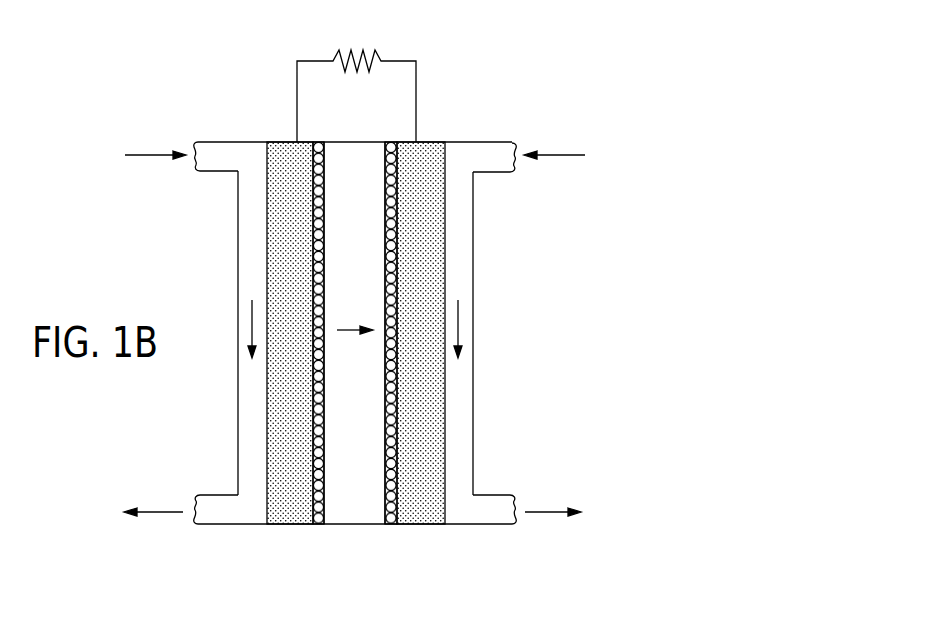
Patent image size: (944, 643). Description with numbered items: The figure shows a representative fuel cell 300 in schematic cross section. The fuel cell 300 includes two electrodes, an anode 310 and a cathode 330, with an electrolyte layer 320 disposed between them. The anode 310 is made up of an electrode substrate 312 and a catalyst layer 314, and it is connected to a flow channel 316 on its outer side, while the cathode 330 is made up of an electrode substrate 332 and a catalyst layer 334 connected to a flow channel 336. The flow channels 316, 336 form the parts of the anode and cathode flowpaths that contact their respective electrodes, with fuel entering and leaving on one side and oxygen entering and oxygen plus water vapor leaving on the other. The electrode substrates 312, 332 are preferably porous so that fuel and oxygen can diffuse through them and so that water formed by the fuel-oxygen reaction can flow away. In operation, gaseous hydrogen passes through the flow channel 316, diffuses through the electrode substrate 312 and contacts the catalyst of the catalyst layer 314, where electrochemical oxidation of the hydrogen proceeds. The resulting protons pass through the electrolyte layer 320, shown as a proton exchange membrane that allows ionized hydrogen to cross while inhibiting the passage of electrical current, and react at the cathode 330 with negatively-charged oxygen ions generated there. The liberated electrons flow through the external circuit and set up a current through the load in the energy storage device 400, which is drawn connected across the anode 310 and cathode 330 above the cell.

The fuel cell 300 is at (183, 76).
The anode 310 is at (294, 338).
The electrode substrate 312 is at (275, 143).
The catalyst layer 314 is at (318, 143).
The flow channel 316 is at (238, 232).
The electrolyte layer 320 is at (321, 532).
The cathode 330 is at (418, 338).
The electrode substrate 332 is at (438, 143).
The catalyst layer 334 is at (393, 143).
The flow channel 336 is at (473, 231).
The energy storage device 400 is at (369, 50).